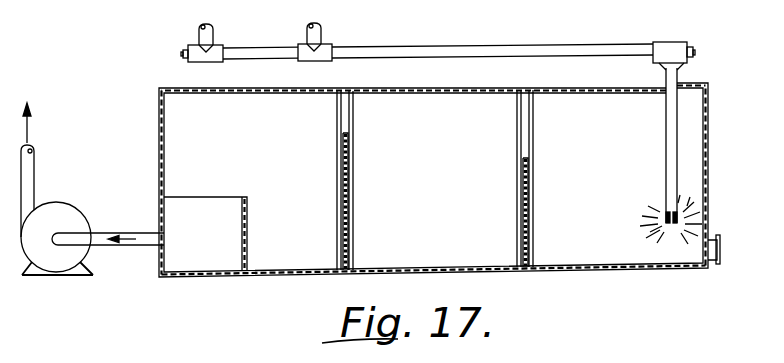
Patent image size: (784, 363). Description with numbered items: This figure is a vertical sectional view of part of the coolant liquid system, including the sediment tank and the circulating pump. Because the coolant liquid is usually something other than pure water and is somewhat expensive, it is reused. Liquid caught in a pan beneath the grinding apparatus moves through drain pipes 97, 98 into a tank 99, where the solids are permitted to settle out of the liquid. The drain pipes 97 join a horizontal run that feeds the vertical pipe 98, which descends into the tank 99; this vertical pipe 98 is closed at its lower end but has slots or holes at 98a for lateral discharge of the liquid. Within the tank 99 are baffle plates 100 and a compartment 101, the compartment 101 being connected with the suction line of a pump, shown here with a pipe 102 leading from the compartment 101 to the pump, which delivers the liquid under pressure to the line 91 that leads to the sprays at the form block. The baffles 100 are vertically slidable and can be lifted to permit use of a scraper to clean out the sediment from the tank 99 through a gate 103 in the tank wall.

The line 91 is at (34, 157).
The drain pipe 97 is at (208, 33).
The vertical pipe 98 is at (520, 50).
The slots or holes 98a is at (665, 214).
The tank 99 is at (453, 87).
The baffle plates 100 is at (347, 196).
The compartment 101 is at (228, 227).
The suction pipe 102 is at (62, 208).
The gate 103 is at (716, 247).